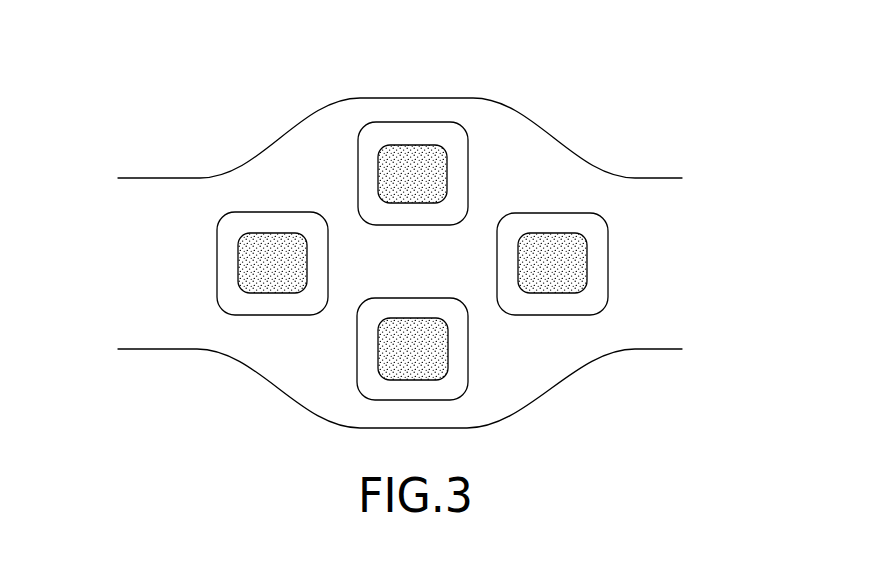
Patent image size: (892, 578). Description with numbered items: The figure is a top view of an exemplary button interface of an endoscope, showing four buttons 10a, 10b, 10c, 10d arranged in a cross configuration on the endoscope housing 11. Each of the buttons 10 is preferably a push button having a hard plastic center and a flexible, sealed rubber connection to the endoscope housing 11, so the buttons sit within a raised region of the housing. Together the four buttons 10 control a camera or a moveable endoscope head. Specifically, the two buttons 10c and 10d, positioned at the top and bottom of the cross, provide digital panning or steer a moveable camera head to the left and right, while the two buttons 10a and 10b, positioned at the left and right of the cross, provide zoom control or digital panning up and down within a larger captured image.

The buttons 10 is at (305, 120).
The button 10a is at (233, 230).
The button 10b is at (598, 230).
The button 10c is at (415, 130).
The button 10d is at (464, 372).
The endoscope housing 11 is at (582, 158).